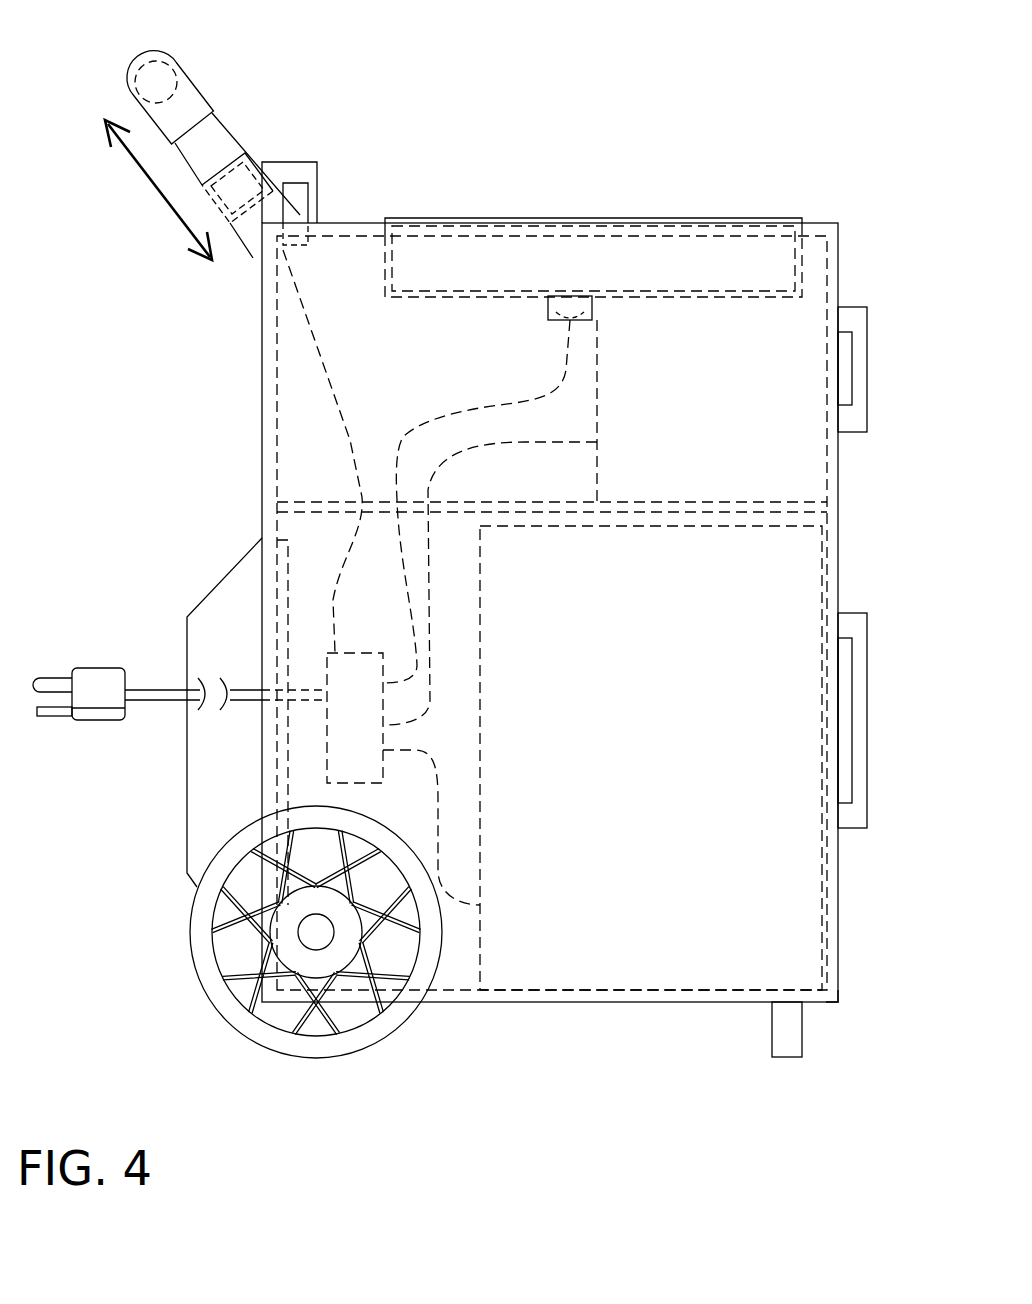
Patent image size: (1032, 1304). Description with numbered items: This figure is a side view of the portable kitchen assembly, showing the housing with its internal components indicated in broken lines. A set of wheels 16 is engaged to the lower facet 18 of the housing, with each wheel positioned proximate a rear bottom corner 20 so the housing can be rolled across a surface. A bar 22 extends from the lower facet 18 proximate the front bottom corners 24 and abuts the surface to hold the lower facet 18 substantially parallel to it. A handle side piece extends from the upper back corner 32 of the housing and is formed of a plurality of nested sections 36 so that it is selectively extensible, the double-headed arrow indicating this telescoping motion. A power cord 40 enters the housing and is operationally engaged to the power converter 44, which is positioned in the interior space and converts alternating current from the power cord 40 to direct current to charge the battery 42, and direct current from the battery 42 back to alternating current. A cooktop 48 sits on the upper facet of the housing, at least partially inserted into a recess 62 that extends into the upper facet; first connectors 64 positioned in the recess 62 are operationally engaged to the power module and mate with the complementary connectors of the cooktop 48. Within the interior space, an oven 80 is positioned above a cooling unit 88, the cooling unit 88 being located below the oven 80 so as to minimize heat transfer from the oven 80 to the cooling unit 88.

The set of wheels 16 is at (402, 1023).
The lower facet 18 is at (511, 1012).
The rear bottom corners 20 is at (264, 1015).
The bar 22 is at (766, 1030).
The front bottom corners 24 is at (848, 1008).
The upper back corner 32 is at (262, 241).
The nested sections 36 is at (218, 135).
The power cord 40 is at (149, 712).
The battery 42 is at (215, 583).
The power converter 44 is at (345, 640).
The cooktop 48 is at (558, 235).
The recess 62 is at (438, 247).
The first connectors 64 is at (594, 302).
The oven 80 is at (750, 443).
The cooling unit 88 is at (720, 601).